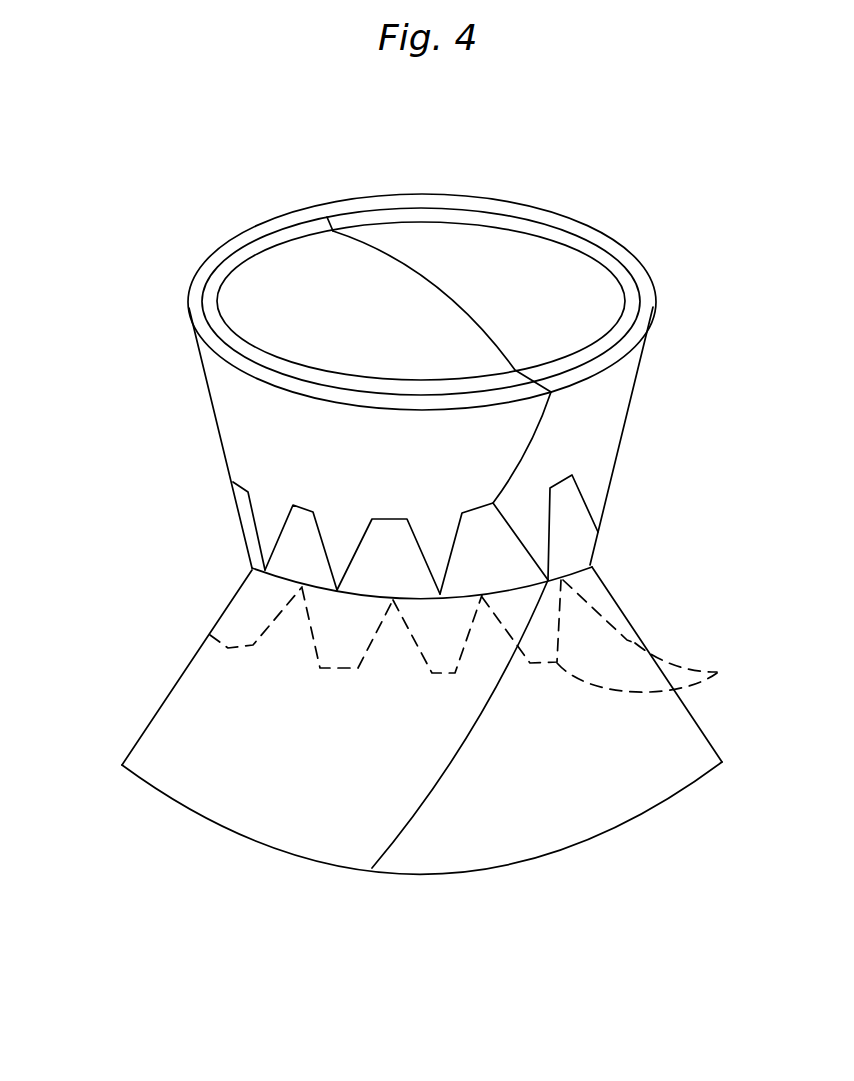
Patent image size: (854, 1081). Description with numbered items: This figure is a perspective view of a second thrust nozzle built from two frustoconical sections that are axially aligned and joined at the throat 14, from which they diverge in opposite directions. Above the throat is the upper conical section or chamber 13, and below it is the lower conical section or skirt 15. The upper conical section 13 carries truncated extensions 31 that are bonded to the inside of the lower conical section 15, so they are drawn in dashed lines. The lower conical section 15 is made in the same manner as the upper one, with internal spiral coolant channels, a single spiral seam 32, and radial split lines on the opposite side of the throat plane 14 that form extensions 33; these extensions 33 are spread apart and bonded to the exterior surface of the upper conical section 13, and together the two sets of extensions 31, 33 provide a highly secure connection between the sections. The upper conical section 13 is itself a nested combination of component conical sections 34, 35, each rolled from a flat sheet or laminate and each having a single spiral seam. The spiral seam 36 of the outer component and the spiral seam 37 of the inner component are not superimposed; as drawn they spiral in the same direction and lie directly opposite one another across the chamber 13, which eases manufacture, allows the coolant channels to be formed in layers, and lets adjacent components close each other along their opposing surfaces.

The nozzle chamber 13 is at (404, 362).
The throat 14 is at (610, 565).
The skirt 15 is at (391, 738).
The truncated extensions 31 is at (482, 636).
The spiral seam 32 is at (430, 805).
The extensions 33 is at (510, 517).
The component conical section 34 is at (555, 240).
The component conical section 35 is at (637, 270).
The spiral seam 36 is at (543, 415).
The spiral seam 37 is at (393, 257).